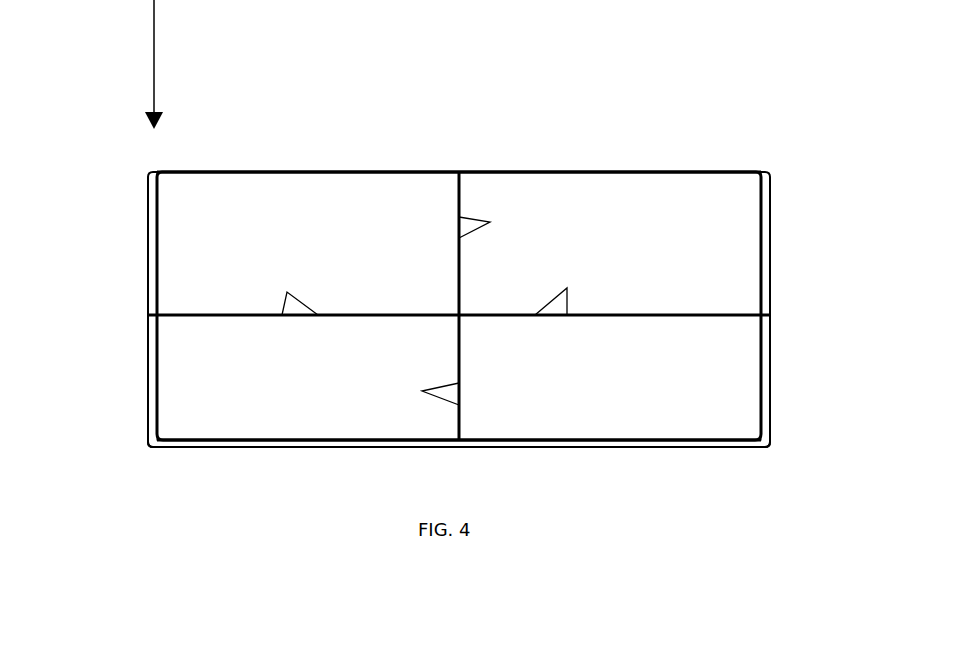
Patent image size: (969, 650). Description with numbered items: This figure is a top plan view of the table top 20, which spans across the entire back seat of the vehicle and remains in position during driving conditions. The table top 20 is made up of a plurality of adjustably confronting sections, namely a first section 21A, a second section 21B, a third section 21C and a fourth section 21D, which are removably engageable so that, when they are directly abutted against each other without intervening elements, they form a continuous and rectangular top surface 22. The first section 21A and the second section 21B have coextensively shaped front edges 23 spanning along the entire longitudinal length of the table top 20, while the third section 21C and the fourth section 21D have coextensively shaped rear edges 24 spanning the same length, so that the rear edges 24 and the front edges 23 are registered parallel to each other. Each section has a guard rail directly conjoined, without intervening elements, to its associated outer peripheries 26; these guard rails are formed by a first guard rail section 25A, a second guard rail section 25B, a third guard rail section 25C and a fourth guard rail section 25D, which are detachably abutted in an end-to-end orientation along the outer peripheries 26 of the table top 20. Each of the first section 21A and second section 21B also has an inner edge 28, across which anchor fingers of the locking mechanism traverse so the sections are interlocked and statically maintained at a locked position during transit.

The table top 20 is at (502, 255).
The first section 21A is at (287, 193).
The second section 21B is at (538, 178).
The third section 21C is at (619, 430).
The fourth section 21D is at (248, 425).
The top surface 22 is at (459, 315).
The front edges 23 is at (202, 172).
The rear edges 24 is at (362, 443).
The first guard rail section 25A is at (147, 231).
The second guard rail section 25B is at (771, 208).
The third guard rail section 25C is at (768, 441).
The fourth guard rail section 25D is at (148, 449).
The outer peripheries 26 is at (155, 190).
The inner edge 28 is at (287, 292).